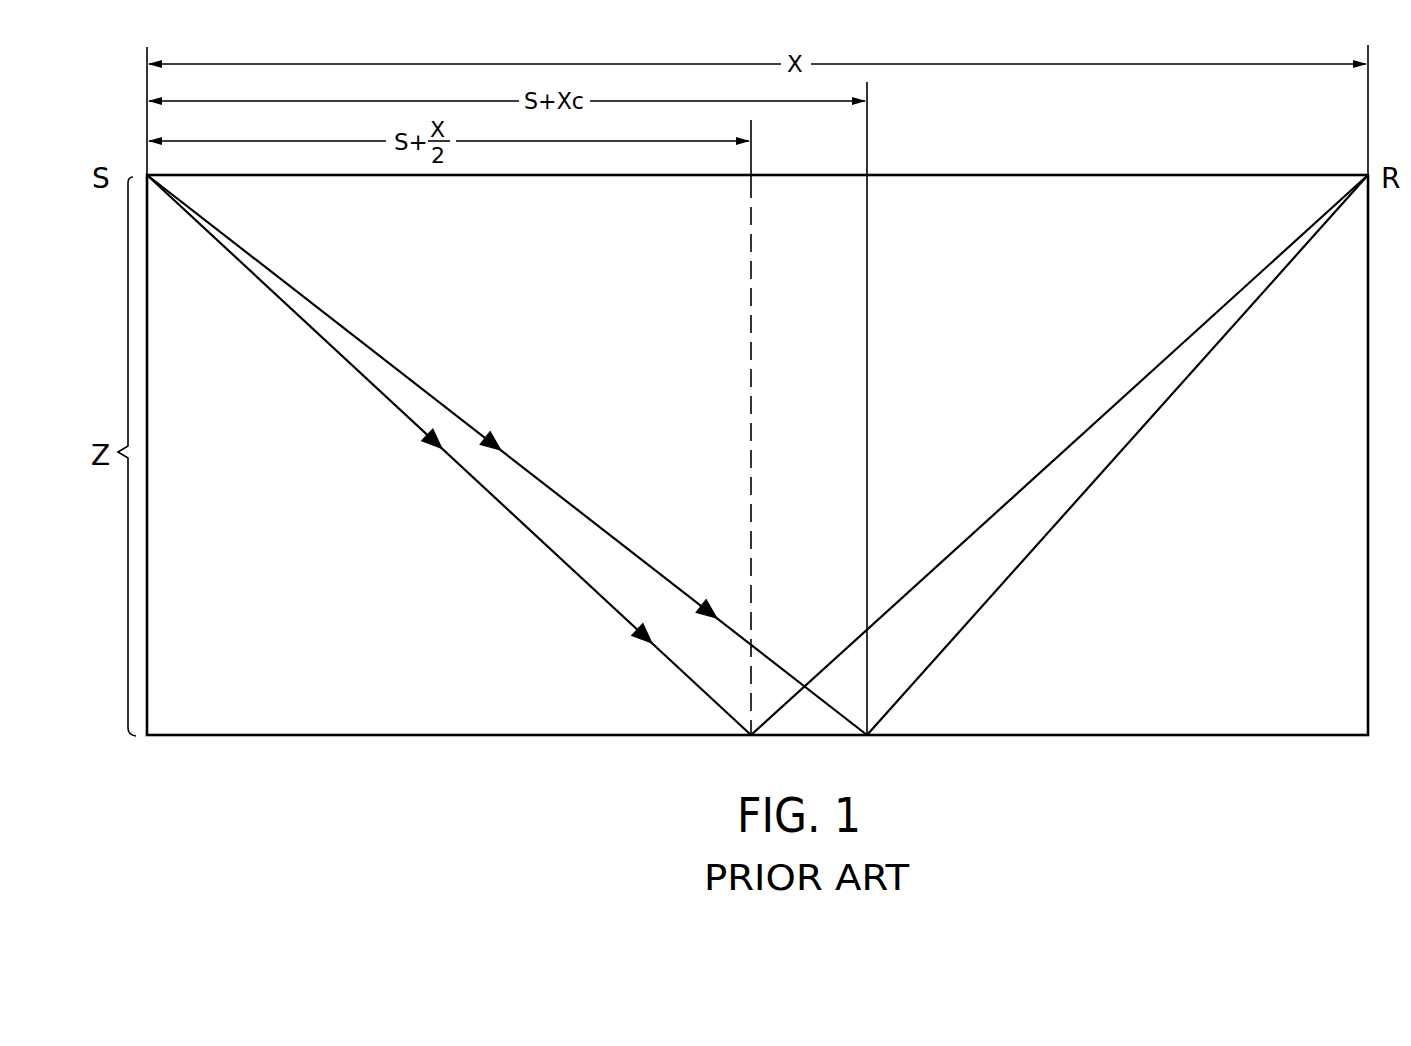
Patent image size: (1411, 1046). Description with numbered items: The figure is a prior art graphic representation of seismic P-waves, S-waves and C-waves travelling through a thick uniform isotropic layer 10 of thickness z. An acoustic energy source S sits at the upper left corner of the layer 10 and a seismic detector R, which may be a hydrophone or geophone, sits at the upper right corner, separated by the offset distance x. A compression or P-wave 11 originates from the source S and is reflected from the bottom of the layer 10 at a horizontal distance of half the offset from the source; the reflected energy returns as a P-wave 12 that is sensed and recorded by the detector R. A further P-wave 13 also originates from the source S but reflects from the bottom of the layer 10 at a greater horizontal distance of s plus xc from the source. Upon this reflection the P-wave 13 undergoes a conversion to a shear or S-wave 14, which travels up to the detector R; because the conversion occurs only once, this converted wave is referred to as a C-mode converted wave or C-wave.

The layer 10 is at (648, 334).
The P-wave 11 is at (375, 388).
The P-wave 12 is at (1042, 466).
The P-wave 13 is at (650, 563).
The S-wave 14 is at (1122, 449).